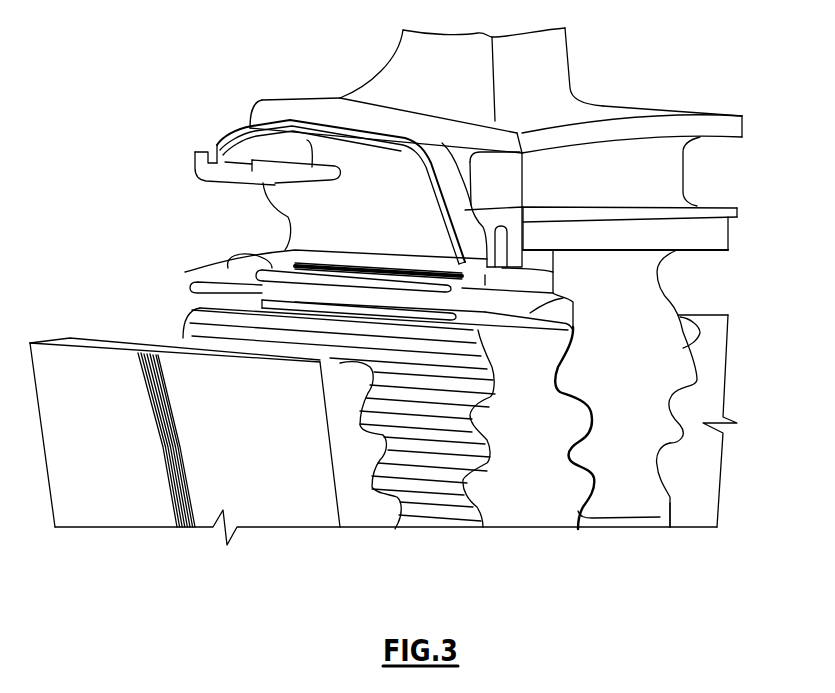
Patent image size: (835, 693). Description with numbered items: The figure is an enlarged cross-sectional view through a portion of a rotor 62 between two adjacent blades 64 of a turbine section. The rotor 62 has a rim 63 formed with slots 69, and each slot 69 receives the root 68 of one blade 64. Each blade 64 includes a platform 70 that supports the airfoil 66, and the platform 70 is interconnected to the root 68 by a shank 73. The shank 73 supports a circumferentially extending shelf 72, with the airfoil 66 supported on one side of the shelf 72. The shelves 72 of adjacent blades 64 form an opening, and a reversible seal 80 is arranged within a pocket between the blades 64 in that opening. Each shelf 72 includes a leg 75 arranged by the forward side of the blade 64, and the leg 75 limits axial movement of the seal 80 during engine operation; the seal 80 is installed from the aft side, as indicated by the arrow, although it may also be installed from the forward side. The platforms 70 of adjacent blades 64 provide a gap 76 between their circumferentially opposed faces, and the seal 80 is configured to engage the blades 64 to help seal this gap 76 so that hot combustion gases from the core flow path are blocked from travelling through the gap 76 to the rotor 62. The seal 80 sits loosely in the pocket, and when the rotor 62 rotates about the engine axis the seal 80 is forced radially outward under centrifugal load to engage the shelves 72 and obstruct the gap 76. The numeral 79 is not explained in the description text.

The rotor 62 is at (712, 407).
The rim 63 is at (235, 313).
The blade 64 is at (750, 163).
The airfoil 66 is at (547, 60).
The root 68 is at (667, 350).
The slot 69 is at (678, 443).
The platform 70 is at (337, 107).
The shelf 72 is at (327, 257).
The shank 73 is at (405, 238).
The leg 75 is at (240, 257).
The gap 76 is at (208, 282).
The damper 79 is at (466, 285).
The reversible seal 80 is at (296, 283).